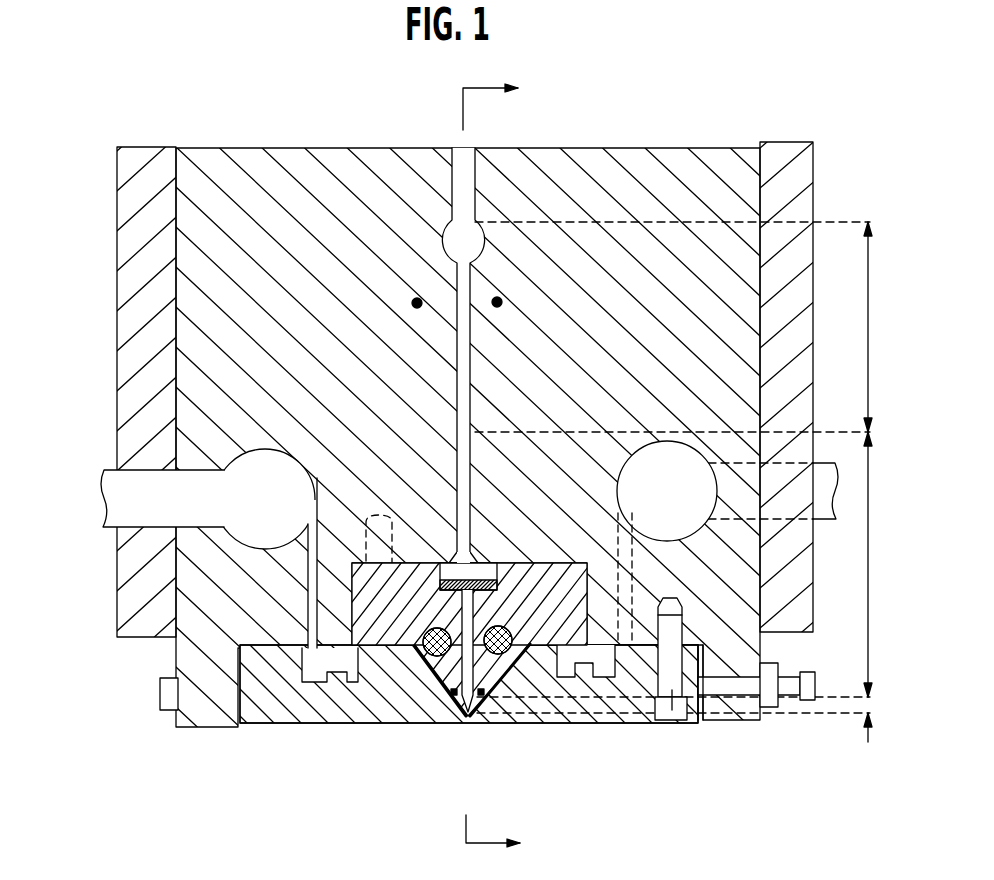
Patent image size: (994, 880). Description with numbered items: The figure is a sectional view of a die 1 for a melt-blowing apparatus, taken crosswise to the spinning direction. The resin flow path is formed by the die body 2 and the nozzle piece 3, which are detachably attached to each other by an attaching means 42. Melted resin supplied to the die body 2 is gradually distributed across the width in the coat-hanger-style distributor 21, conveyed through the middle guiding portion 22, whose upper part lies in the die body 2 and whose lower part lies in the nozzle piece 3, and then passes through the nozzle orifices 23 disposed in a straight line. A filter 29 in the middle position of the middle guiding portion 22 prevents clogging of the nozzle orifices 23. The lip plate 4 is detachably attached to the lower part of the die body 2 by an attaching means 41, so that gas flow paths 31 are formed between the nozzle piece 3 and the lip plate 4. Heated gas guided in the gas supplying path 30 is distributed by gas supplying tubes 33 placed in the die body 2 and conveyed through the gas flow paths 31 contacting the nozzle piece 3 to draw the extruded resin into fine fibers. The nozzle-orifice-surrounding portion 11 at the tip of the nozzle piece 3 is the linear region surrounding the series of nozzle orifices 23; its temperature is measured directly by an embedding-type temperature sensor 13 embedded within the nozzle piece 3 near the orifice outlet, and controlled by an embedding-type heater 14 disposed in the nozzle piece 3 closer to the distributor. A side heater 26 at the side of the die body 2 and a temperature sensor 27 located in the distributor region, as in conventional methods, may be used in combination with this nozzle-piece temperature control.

The die 1 is at (716, 122).
The die body 2 is at (742, 292).
The nozzle piece 3 is at (613, 705).
The lip plate 4 is at (592, 705).
The nozzle-orifice-surrounding portion 11 is at (495, 712).
The embedding-type temperature sensor 13 is at (437, 712).
The embedding-type heater 14 is at (400, 720).
The coat-hanger-style distributor 21 is at (483, 252).
The middle guiding portion 22 is at (885, 482).
The nozzle orifices 23 is at (468, 716).
The side heater 26 is at (118, 378).
The temperature sensor 27 is at (415, 300).
The filter 29 is at (497, 580).
The gas supplying path 30 is at (308, 590).
The gas flow paths 31 is at (482, 706).
The gas supplying tubes 33 is at (253, 472).
The attaching means 41 is at (676, 718).
The attaching means 42 is at (385, 618).